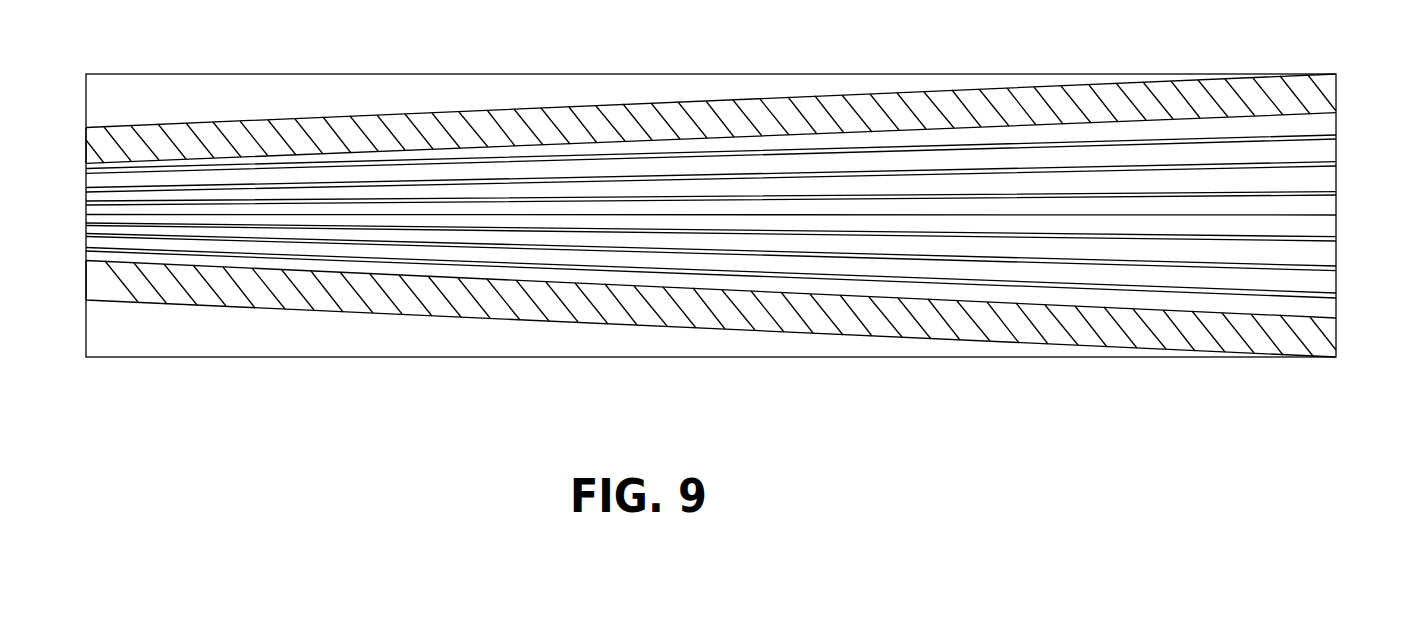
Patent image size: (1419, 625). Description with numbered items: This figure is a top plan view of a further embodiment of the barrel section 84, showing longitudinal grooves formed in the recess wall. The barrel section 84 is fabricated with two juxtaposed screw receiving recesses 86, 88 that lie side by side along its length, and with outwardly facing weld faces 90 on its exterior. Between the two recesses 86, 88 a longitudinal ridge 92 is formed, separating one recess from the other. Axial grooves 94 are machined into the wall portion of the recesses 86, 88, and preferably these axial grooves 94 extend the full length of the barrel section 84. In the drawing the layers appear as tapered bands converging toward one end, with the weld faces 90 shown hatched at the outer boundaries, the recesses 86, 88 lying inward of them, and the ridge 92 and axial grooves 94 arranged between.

The barrel section 84 is at (1335, 92).
The screw receiving recess 86 is at (1325, 120).
The screw receiving recess 88 is at (1308, 306).
The weld faces 90 is at (886, 108).
The longitudinal ridge 92 is at (1337, 213).
The axial grooves 94 is at (1333, 193).